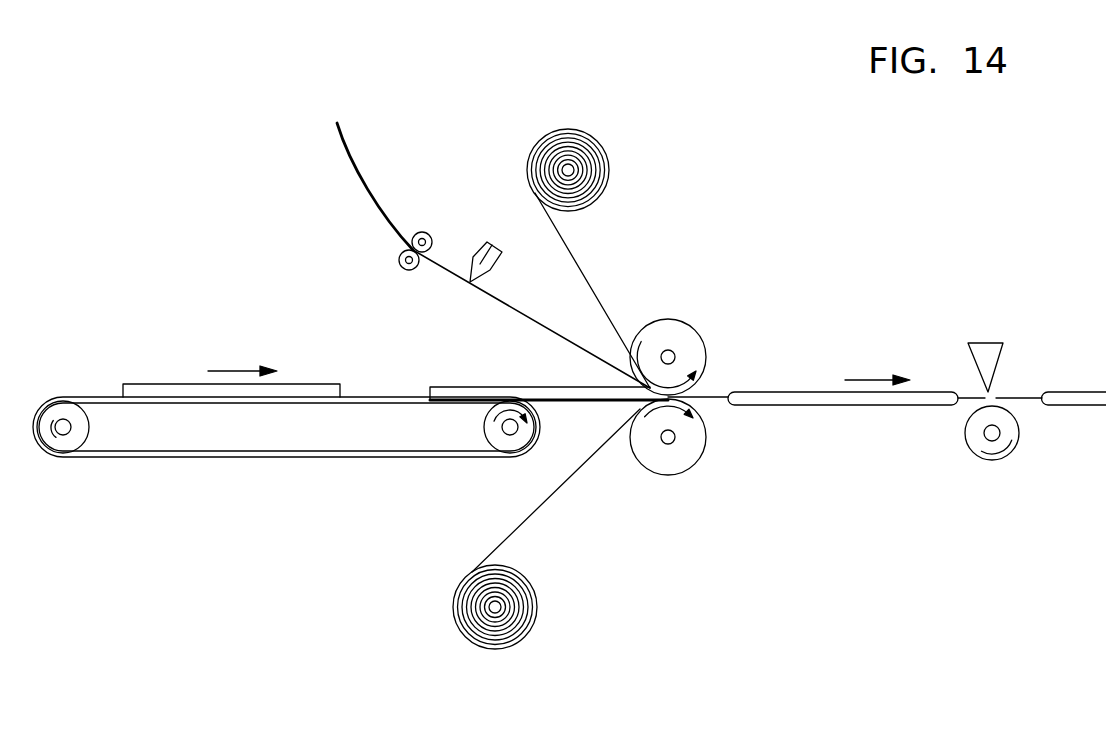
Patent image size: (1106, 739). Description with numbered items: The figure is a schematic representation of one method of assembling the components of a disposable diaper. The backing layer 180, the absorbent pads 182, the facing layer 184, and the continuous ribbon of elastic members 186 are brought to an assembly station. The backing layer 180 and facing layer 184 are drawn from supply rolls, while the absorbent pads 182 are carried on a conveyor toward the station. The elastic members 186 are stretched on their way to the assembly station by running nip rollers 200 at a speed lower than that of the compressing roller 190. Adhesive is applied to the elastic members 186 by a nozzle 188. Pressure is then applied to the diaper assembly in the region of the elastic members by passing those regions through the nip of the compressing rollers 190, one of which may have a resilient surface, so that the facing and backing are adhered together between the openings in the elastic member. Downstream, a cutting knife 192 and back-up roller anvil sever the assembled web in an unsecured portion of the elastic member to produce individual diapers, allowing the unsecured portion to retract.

The backing layer 180 is at (517, 532).
The absorbent pads 182 is at (148, 384).
The facing layer 184 is at (528, 182).
The continuous ribbon of elastic members 186 is at (347, 148).
The nozzle 188 is at (473, 257).
The compressing rollers 190 is at (690, 320).
The cutting knife 192 is at (1002, 360).
The nip rollers 200 is at (415, 232).